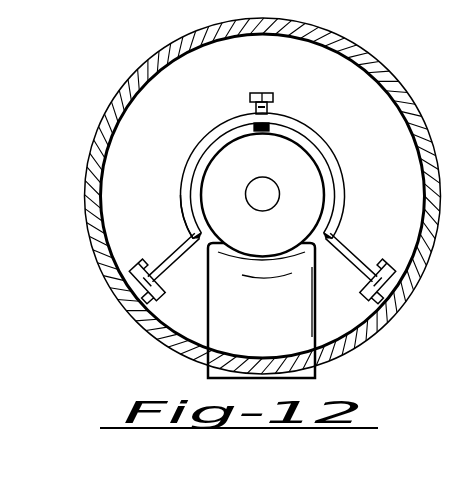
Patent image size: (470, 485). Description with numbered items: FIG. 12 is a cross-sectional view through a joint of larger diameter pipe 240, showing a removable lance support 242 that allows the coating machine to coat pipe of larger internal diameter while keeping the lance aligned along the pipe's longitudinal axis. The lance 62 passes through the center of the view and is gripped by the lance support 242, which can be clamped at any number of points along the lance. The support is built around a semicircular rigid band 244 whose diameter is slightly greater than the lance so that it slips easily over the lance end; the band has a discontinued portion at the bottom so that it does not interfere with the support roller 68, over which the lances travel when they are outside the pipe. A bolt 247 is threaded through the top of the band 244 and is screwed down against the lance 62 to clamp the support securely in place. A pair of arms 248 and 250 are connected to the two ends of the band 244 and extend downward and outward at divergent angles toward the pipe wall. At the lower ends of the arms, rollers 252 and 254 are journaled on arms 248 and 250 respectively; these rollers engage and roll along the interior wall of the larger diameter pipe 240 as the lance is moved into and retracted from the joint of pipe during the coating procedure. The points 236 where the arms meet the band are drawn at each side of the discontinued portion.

The larger diameter pipe 240 is at (420, 126).
The lance support 242 is at (304, 119).
The semicircular rigid band 244 is at (203, 142).
The bolt 247 is at (265, 92).
The lance 62 is at (311, 182).
The support roller 68 is at (300, 316).
The joint 236 is at (202, 244).
The arm 248 is at (176, 252).
The arm 250 is at (346, 247).
The roller 252 is at (149, 301).
The roller 254 is at (362, 276).